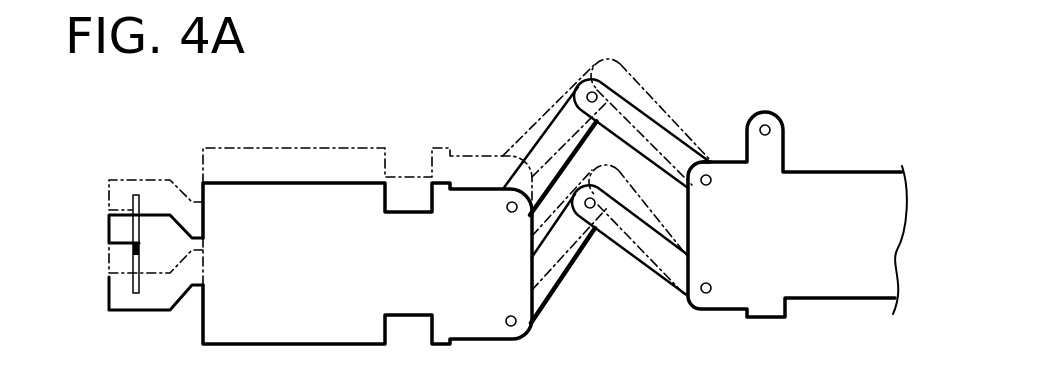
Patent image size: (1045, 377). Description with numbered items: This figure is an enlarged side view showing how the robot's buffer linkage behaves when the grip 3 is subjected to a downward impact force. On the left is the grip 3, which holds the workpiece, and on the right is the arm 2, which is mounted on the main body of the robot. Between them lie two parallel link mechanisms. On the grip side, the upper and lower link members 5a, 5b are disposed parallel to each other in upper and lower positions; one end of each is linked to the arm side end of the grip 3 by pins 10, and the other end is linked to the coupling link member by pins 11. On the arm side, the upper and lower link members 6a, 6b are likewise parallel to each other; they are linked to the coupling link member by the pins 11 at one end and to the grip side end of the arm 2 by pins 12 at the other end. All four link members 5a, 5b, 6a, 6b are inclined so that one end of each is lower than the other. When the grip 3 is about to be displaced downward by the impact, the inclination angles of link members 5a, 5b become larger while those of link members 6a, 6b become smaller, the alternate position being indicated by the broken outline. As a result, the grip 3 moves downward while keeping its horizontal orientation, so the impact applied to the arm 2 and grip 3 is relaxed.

The arm 2 is at (822, 190).
The grip 3 is at (258, 183).
The upper link member 5a is at (553, 107).
The lower link member 5b is at (568, 264).
The upper link member 6a is at (637, 84).
The lower link member 6b is at (628, 268).
The pins 10 is at (510, 203).
The pins 11 is at (590, 92).
The pins 12 is at (708, 175).